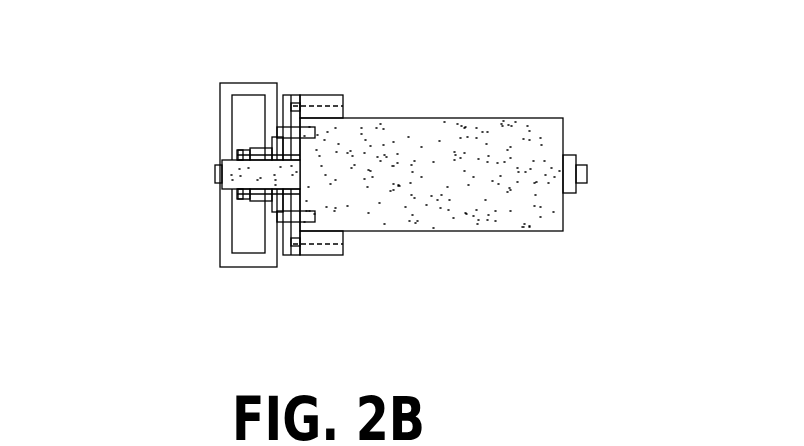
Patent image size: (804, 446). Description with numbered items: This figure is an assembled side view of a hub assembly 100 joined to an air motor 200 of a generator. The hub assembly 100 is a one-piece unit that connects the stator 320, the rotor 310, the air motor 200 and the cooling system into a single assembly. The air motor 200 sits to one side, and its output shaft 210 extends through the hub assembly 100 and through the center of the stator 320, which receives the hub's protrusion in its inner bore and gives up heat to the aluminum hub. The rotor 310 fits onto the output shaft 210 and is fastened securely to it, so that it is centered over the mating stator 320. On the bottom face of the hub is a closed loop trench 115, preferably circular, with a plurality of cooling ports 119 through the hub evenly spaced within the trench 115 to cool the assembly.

The hub assembly 100 is at (287, 90).
The closed loop trench 115 is at (300, 95).
The cooling ports 119 is at (343, 108).
The air motor 200 is at (513, 93).
The output shaft 210 is at (227, 177).
The rotor 310 is at (250, 255).
The stator 320 is at (247, 83).